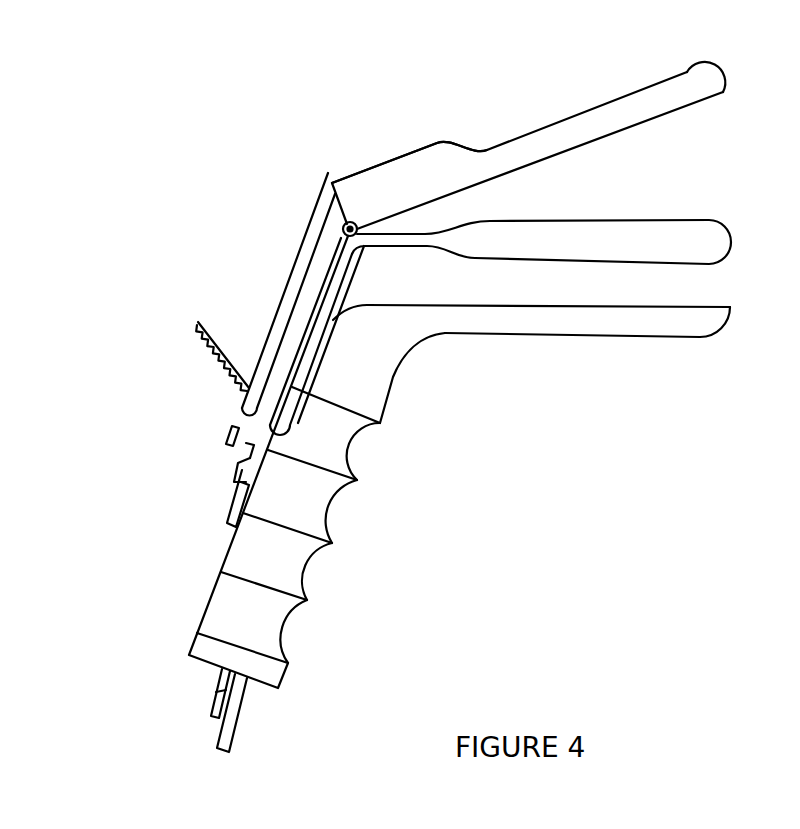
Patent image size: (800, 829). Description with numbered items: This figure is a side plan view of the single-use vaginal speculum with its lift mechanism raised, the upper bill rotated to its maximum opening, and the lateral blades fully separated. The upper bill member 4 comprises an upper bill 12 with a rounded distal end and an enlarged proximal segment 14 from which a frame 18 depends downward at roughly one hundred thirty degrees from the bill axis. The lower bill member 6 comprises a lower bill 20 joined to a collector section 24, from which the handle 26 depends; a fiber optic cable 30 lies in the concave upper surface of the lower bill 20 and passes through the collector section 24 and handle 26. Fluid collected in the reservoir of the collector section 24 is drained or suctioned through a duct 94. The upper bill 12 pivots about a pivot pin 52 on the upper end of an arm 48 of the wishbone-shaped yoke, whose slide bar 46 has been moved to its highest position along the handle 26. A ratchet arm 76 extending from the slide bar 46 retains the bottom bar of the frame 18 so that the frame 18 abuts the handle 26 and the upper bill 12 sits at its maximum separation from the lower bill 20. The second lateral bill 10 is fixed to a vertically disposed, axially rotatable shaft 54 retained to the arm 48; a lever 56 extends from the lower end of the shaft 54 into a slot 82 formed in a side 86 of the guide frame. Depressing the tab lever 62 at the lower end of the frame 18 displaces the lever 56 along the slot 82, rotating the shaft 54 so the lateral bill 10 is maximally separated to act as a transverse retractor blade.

The upper bill member 4 is at (572, 118).
The lower bill member 6 is at (578, 335).
The second lateral bill 10 is at (710, 227).
The upper bill 12 is at (677, 87).
The enlarged proximal segment 14 is at (393, 167).
The frame 18 is at (297, 277).
The lower bill 20 is at (678, 325).
The collector section 24 is at (442, 338).
The handle 26 is at (228, 603).
The fiber optic cable 30 is at (230, 722).
The slide bar 46 is at (235, 520).
The arm of yoke 48 is at (322, 268).
The pivot pin 52 is at (331, 183).
The shaft 54 is at (298, 335).
The lever 56 is at (240, 433).
The tab lever 62 is at (232, 430).
The ratchet arm 76 is at (196, 322).
The slot 82 is at (228, 427).
The side of guide frame 86 is at (242, 408).
The duct 94 is at (212, 703).